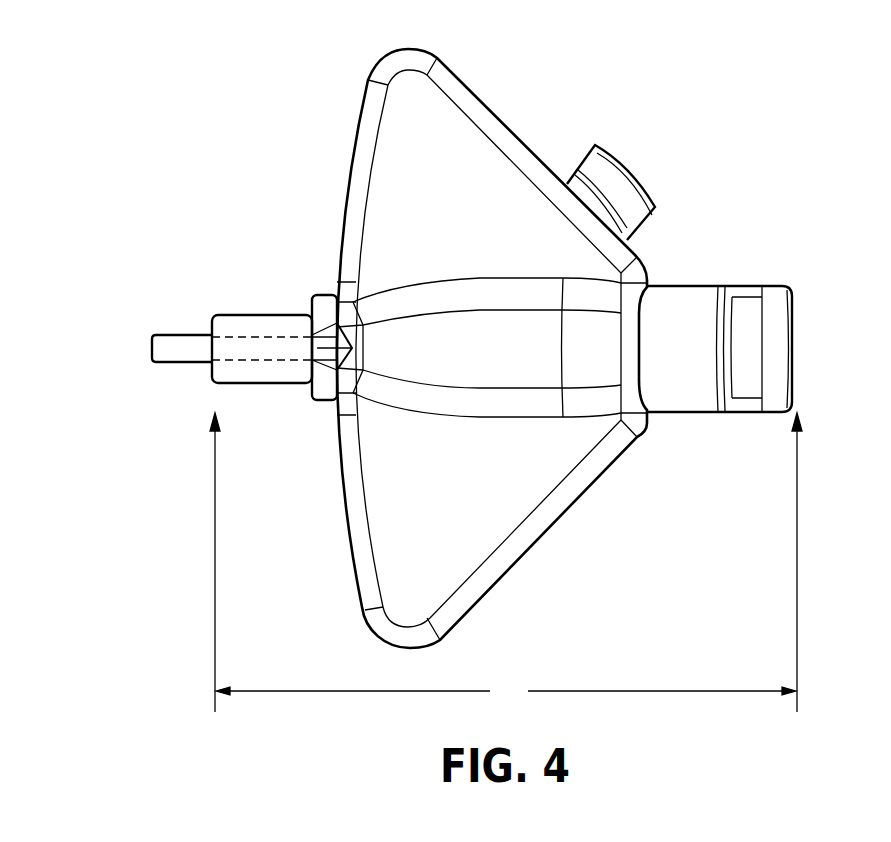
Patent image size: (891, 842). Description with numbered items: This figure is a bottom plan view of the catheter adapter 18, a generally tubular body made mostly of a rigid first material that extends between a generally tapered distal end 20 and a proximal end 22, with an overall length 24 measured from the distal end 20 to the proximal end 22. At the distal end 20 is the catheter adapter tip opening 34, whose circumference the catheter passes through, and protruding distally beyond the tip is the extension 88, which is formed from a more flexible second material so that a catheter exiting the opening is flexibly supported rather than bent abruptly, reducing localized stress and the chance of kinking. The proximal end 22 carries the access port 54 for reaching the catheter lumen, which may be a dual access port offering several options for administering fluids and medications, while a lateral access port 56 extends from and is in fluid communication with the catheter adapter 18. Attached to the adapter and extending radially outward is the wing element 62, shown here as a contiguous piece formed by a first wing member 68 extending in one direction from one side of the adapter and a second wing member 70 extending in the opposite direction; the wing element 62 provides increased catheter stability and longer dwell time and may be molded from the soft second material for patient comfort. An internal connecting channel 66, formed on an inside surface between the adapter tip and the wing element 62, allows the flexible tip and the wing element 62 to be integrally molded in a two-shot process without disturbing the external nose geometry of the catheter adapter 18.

The catheter adapter 18 is at (608, 80).
The distal end 20 is at (213, 578).
The proximal end 22 is at (796, 578).
The overall length 24 is at (506, 691).
The catheter adapter tip opening 34 is at (220, 348).
The access port 54 is at (793, 346).
The lateral access port 56 is at (633, 172).
The wing element 62 is at (390, 281).
The internal connecting channel 66 is at (318, 348).
The first wing member 68 is at (494, 528).
The second wing member 70 is at (452, 123).
The extension 88 is at (178, 333).